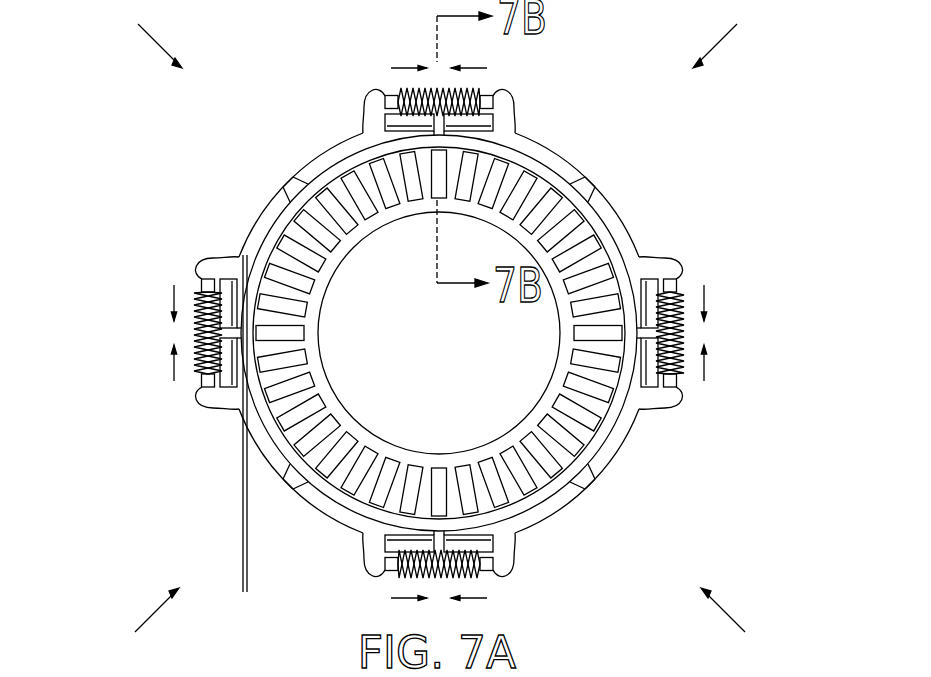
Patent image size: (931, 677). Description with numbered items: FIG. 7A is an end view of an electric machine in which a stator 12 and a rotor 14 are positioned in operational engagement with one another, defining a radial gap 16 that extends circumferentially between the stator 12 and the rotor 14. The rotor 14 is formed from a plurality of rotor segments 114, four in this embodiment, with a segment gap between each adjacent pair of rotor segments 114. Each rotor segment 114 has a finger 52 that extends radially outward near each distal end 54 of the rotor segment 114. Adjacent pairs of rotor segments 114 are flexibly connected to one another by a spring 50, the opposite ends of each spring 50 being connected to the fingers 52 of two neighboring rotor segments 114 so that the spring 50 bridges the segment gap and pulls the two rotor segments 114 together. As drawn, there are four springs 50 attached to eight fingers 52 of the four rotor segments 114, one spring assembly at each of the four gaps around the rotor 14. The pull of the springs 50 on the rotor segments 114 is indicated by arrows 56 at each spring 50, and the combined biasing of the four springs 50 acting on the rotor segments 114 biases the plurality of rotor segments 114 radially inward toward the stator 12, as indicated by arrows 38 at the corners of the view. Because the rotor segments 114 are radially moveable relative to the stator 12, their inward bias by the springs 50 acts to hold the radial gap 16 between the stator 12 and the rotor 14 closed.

The stator 12 is at (497, 178).
The rotor 14 is at (584, 152).
The radial gap 16 is at (203, 572).
The arrows 38 is at (134, 48).
The spring 50 is at (396, 92).
The finger 52 is at (501, 106).
The distal end 54 is at (510, 127).
The arrows 56 is at (390, 64).
The rotor segment 114 is at (283, 191).